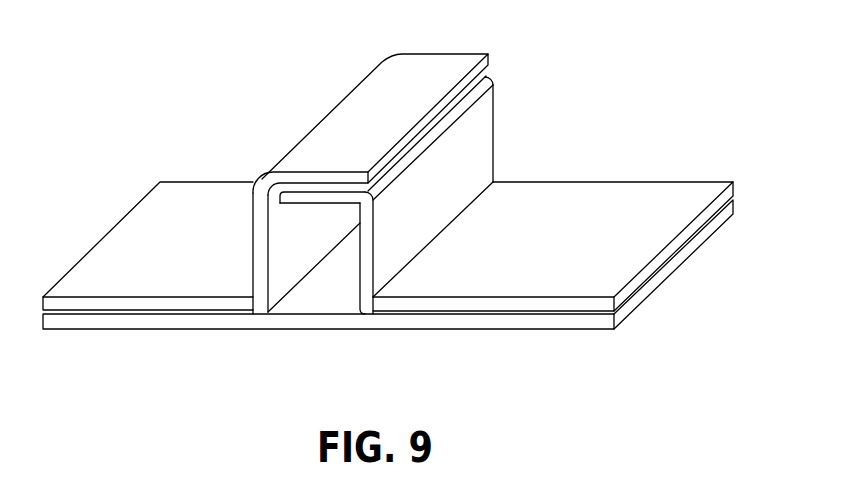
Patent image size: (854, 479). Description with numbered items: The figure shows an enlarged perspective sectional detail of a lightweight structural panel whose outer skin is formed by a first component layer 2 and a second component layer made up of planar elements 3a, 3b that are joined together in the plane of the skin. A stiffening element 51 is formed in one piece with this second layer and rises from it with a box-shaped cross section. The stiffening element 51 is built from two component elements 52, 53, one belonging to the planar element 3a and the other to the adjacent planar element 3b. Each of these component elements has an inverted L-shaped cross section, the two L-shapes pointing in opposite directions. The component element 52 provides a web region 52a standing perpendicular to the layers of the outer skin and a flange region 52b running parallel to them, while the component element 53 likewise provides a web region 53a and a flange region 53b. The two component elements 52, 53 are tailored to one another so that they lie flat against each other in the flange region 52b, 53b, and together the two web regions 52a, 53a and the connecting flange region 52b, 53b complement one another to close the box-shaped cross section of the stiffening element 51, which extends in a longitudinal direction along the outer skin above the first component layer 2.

The first component layer 2 is at (530, 323).
The planar element 3a is at (657, 198).
The planar element 3b is at (210, 185).
The stiffening element 51 is at (441, 178).
The component element 52 is at (465, 173).
The web region 52a is at (470, 147).
The flange region 52b is at (325, 201).
The component element 53 is at (255, 166).
The web region 53a is at (255, 257).
The flange region 53b is at (370, 106).